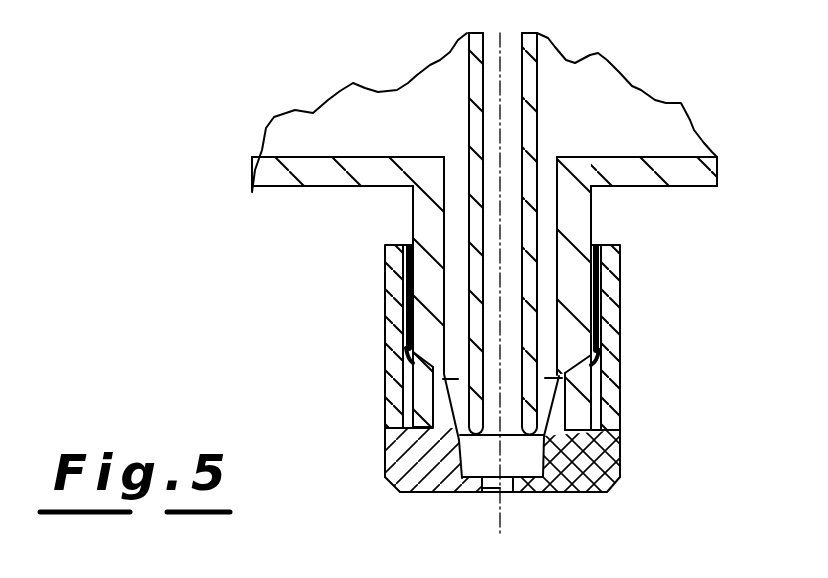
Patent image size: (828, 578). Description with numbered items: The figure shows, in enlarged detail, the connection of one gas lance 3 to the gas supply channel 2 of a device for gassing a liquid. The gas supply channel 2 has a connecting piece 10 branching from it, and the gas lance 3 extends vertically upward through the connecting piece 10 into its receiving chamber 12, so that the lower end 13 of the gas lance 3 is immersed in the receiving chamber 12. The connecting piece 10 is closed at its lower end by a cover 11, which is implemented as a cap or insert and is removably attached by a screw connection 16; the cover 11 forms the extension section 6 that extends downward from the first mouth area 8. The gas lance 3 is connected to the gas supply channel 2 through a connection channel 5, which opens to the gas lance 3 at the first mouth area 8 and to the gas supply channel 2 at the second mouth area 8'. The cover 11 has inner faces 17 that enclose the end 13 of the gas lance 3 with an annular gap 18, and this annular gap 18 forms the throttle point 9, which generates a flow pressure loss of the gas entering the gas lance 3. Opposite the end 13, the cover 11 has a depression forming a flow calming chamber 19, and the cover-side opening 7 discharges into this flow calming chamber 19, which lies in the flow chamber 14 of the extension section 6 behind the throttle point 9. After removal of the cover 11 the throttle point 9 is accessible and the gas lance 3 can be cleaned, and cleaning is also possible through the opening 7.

The gas supply channel 2 is at (326, 127).
The gas lance 3 is at (540, 98).
The second mouth area 8' is at (522, 129).
The connecting piece 10 is at (427, 228).
The receiving chamber 12 is at (622, 259).
The connection channel 5 is at (446, 296).
The end of the gas lance 13 is at (545, 356).
The cover 11 is at (400, 328).
The screw connection 16 is at (620, 292).
The inner faces 17 is at (612, 482).
The annular gap 18 is at (548, 440).
The first mouth area 8 is at (385, 464).
The throttle point 9 is at (448, 445).
The flow chamber 14 is at (463, 480).
The opening 7 is at (514, 493).
The extension section 6 is at (489, 497).
The flow calming chamber 19 is at (553, 492).